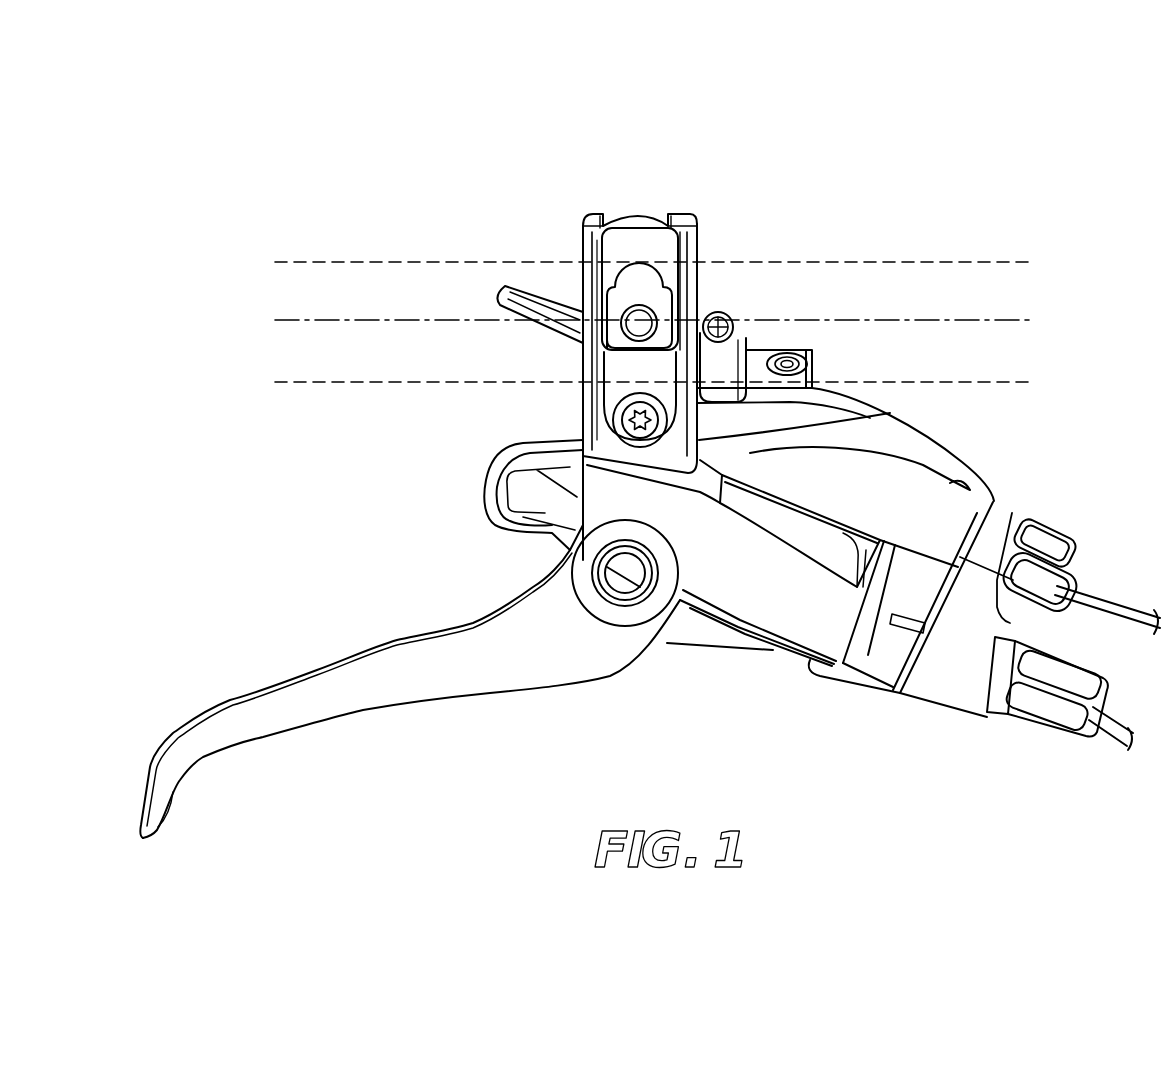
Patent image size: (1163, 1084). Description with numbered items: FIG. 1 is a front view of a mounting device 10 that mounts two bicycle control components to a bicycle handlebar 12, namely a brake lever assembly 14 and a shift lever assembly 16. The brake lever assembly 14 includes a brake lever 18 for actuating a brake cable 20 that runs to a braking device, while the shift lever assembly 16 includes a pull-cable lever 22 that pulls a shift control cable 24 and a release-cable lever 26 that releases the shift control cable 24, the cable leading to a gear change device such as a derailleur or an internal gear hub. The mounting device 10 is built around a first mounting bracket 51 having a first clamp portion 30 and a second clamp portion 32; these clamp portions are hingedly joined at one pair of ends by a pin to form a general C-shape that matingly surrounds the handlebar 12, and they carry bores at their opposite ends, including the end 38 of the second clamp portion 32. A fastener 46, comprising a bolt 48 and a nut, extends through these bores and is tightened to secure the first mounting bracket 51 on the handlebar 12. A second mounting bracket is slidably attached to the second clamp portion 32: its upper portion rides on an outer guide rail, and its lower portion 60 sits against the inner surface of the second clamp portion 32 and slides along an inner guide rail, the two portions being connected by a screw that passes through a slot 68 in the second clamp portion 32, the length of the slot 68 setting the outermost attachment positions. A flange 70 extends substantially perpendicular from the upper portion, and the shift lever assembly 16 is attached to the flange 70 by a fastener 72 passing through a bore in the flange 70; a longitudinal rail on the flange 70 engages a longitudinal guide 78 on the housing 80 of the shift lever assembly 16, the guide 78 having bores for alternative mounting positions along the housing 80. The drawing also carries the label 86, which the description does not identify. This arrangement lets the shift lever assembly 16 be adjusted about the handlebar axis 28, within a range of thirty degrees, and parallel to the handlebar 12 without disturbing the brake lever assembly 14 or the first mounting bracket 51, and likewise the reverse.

The mounting device 10 is at (666, 122).
The bicycle handlebar 12 is at (918, 263).
The brake lever assembly 14 is at (752, 677).
The shift lever assembly 16 is at (966, 440).
The brake lever 18 is at (312, 670).
The brake cable 20 is at (1100, 733).
The pull-cable lever 22 is at (498, 297).
The shift control cable 24 is at (1108, 600).
The release-cable lever 26 is at (490, 484).
The handlebar axis 28 is at (935, 320).
The first clamp portion 30 is at (688, 293).
The second clamp portion 32 is at (688, 217).
The end of second clamp portion 38 is at (889, 414).
The fastener 46 is at (592, 412).
The bolt 48 is at (625, 427).
The first mounting bracket 51 is at (733, 225).
The lower portion 60 is at (607, 300).
The slot 68 is at (660, 273).
The flange 70 is at (732, 323).
The fastener 72 is at (745, 340).
The longitudinal guide 78 is at (800, 367).
The housing 80 is at (948, 495).
The lever arm 86 is at (717, 598).